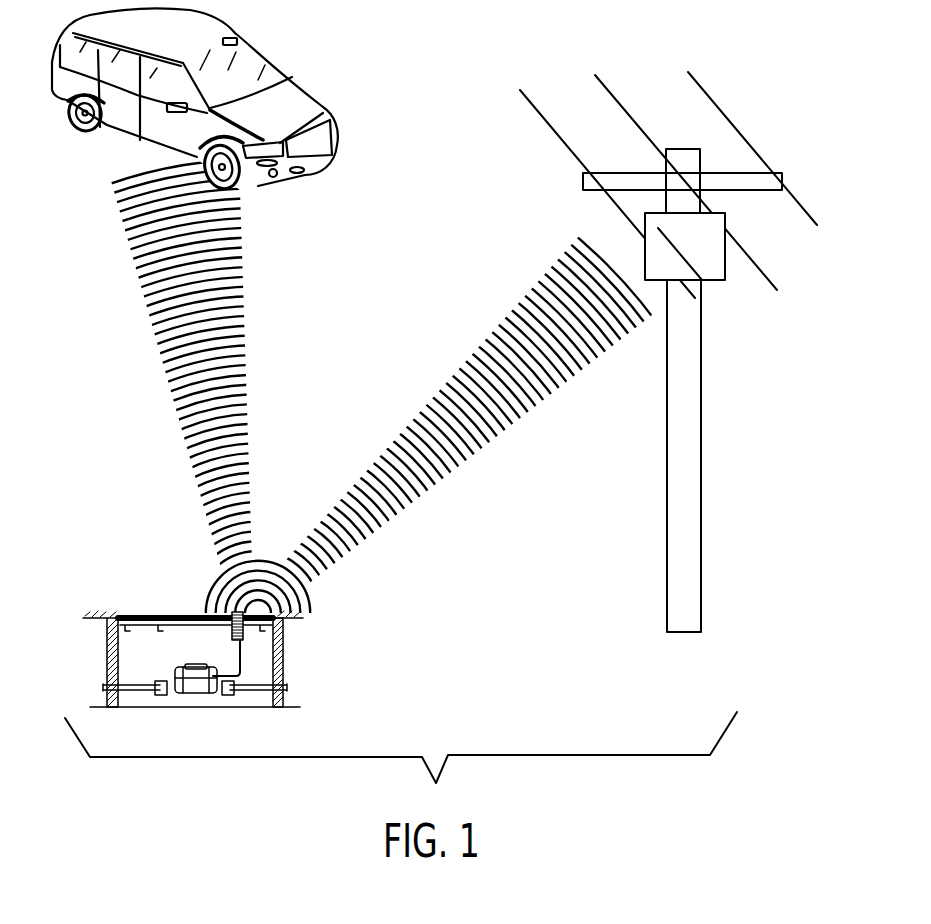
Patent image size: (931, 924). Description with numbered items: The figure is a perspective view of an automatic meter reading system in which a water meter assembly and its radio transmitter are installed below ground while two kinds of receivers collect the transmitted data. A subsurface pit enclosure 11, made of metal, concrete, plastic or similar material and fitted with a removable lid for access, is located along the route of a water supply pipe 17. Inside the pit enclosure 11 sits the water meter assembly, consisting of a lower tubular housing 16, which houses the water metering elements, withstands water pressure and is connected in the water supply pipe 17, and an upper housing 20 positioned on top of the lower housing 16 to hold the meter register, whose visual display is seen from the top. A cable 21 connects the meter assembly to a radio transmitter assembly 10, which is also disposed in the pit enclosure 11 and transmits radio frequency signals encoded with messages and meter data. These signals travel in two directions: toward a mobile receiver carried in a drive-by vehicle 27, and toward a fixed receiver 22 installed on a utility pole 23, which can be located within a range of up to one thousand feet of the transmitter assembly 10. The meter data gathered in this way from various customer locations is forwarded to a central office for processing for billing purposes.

The radio transmitter assembly 10 is at (280, 614).
The subsurface pit enclosure 11 is at (161, 611).
The lower tubular housing 16 is at (197, 690).
The water supply pipe 17 is at (253, 692).
The upper housing 20 is at (195, 667).
The cable 21 is at (235, 647).
The fixed receiver 22 is at (727, 278).
The utility pole 23 is at (692, 427).
The vehicle 27 is at (307, 98).